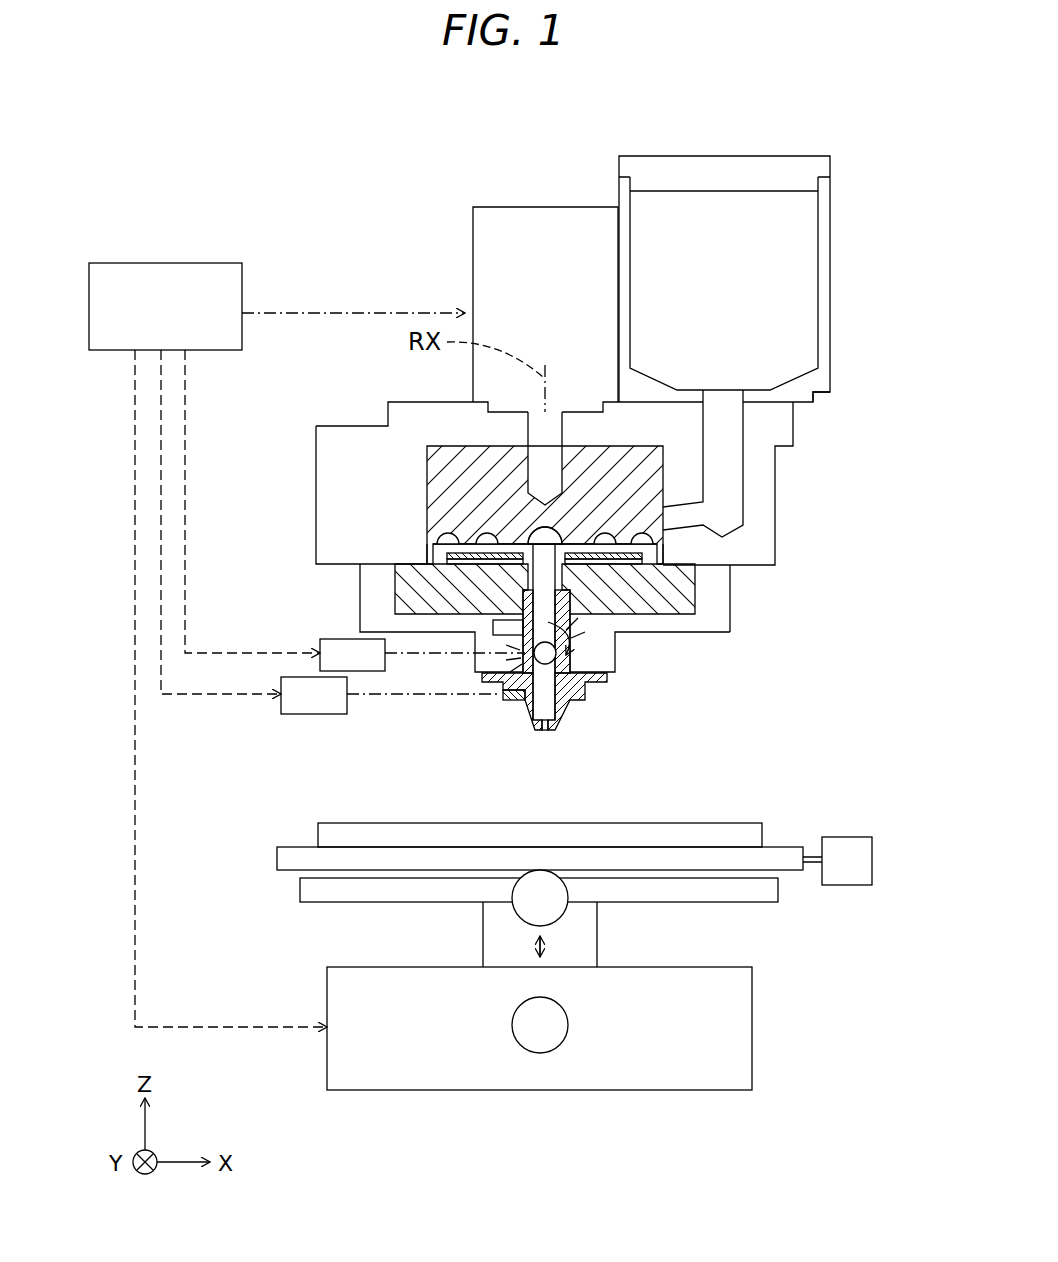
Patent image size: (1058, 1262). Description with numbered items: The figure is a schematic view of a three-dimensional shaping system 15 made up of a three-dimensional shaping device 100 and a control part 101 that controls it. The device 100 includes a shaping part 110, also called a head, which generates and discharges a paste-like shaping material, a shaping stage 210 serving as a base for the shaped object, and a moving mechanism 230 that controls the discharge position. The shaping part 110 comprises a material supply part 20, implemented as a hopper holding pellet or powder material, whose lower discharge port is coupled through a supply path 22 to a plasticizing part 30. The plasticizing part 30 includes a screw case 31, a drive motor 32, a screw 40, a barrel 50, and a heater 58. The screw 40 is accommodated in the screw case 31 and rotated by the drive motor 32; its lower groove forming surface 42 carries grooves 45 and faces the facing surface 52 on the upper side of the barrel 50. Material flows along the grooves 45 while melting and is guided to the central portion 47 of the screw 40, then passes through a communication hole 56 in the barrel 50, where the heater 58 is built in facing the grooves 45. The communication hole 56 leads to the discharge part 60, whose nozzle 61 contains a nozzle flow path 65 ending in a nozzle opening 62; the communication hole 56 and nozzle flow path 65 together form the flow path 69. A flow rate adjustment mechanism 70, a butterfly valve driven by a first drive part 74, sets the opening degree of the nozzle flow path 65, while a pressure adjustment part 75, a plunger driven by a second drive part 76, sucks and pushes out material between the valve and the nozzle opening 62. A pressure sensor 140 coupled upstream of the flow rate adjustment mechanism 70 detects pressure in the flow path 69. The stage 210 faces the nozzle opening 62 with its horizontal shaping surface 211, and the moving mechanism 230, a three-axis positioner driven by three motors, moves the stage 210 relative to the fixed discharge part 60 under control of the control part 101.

The three-dimensional shaping system 15 is at (818, 107).
The three-dimensional shaping device 100 is at (720, 132).
The shaping part 110 is at (427, 202).
The control part 101 is at (220, 263).
The plasticizing part 30 is at (393, 300).
The drive motor 32 is at (473, 238).
The screw case 31 is at (440, 403).
The heater 58 is at (732, 583).
The material supply part 20 is at (830, 273).
The supply path 22 is at (722, 467).
The screw 40 is at (525, 528).
The groove forming surface 42 is at (427, 565).
The central portion 47 is at (458, 537).
The grooves 45 is at (470, 555).
The facing surface 52 is at (447, 558).
The barrel 50 is at (400, 598).
The communication hole 56 is at (547, 615).
The nozzle flow path 65 is at (570, 633).
The flow path 69 is at (705, 640).
The pressure sensor 140 is at (493, 626).
The first drive part 74 is at (320, 640).
The second drive part 76 is at (291, 714).
The discharge part 60 is at (653, 700).
The nozzle 61 is at (597, 695).
The nozzle opening 62 is at (543, 723).
The pressure adjustment part 75 is at (502, 700).
The flow rate adjustment mechanism 70 is at (533, 657).
The shaping surface 211 is at (628, 823).
The stage 210 is at (707, 830).
The moving mechanism 230 is at (800, 947).